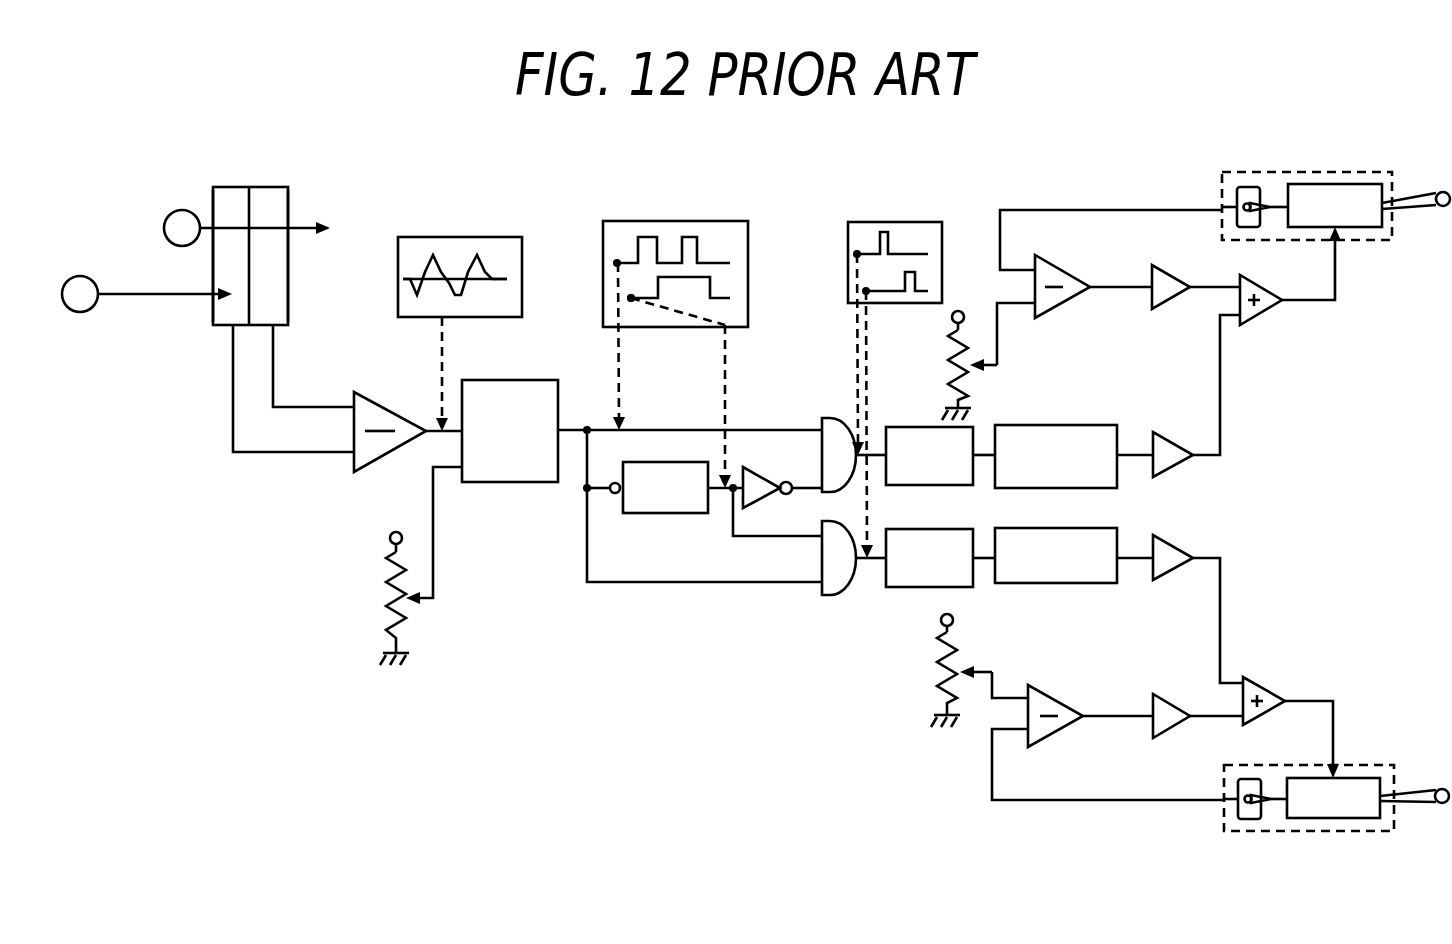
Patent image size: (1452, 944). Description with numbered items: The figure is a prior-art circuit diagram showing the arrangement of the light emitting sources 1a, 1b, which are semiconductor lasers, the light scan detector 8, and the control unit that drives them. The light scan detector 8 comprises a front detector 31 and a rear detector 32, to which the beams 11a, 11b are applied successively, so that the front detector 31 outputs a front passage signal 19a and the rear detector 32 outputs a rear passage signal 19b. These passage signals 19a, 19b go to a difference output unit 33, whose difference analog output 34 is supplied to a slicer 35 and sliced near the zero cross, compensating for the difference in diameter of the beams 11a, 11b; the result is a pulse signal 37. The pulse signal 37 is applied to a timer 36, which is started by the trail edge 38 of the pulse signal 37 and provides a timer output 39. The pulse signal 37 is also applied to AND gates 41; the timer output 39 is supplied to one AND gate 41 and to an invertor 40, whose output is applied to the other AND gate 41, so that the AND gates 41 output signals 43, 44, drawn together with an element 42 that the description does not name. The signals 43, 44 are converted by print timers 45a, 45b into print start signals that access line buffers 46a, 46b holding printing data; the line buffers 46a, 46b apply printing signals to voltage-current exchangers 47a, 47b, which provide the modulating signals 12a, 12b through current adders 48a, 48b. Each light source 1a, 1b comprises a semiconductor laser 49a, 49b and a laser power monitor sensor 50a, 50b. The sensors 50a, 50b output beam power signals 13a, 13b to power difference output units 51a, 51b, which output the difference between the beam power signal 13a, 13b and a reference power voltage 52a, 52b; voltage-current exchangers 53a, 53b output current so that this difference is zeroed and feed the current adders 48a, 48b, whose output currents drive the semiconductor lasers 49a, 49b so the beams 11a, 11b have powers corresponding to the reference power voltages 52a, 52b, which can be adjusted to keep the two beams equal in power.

The light source 1a is at (1338, 172).
The light source 1b is at (1310, 831).
The light scan detector 8 is at (253, 187).
The light beam 11a is at (178, 210).
The light beam 11b is at (90, 312).
The modulating signal 12a is at (1323, 301).
The modulating signal 12b is at (1335, 708).
The beam power signal 13a is at (1052, 210).
The beam power signal 13b is at (1024, 800).
The front passage signal 19a is at (233, 418).
The rear passage signal 19b is at (309, 407).
The front detector 31 is at (218, 327).
The rear detector 32 is at (288, 310).
The difference output unit 33 is at (354, 465).
The difference analog output 34 is at (418, 237).
The slicer 35 is at (480, 482).
The timer 36 is at (640, 513).
The pulse signal 37 is at (636, 262).
The trail edge 38 is at (653, 278).
The timer output 39 is at (628, 296).
The invertor 40 is at (760, 500).
The AND gate 41 is at (828, 418).
The gate output waveforms 42 is at (920, 222).
The output signal 43 is at (870, 243).
The output signal 44 is at (918, 281).
The print timer 45a is at (895, 427).
The print timer 45b is at (905, 587).
The line buffer 46a is at (1093, 425).
The line buffer 46b is at (1100, 583).
The voltage-current exchanger 47a is at (1172, 470).
The voltage-current exchanger 47b is at (1178, 546).
The current adder 48a is at (1258, 325).
The current adder 48b is at (1265, 679).
The semiconductor laser 49a is at (1372, 228).
The semiconductor laser 49b is at (1365, 818).
The laser power monitor sensor 50a is at (1250, 187).
The laser power monitor sensor 50b is at (1250, 819).
The power difference output unit 51a is at (1066, 306).
The power difference output unit 51b is at (1062, 703).
The reference power voltage 52a is at (1000, 350).
The reference power voltage 52b is at (985, 670).
The voltage-current exchanger 53a is at (1175, 300).
The monitor voltage-current exchanger 53b is at (1168, 696).